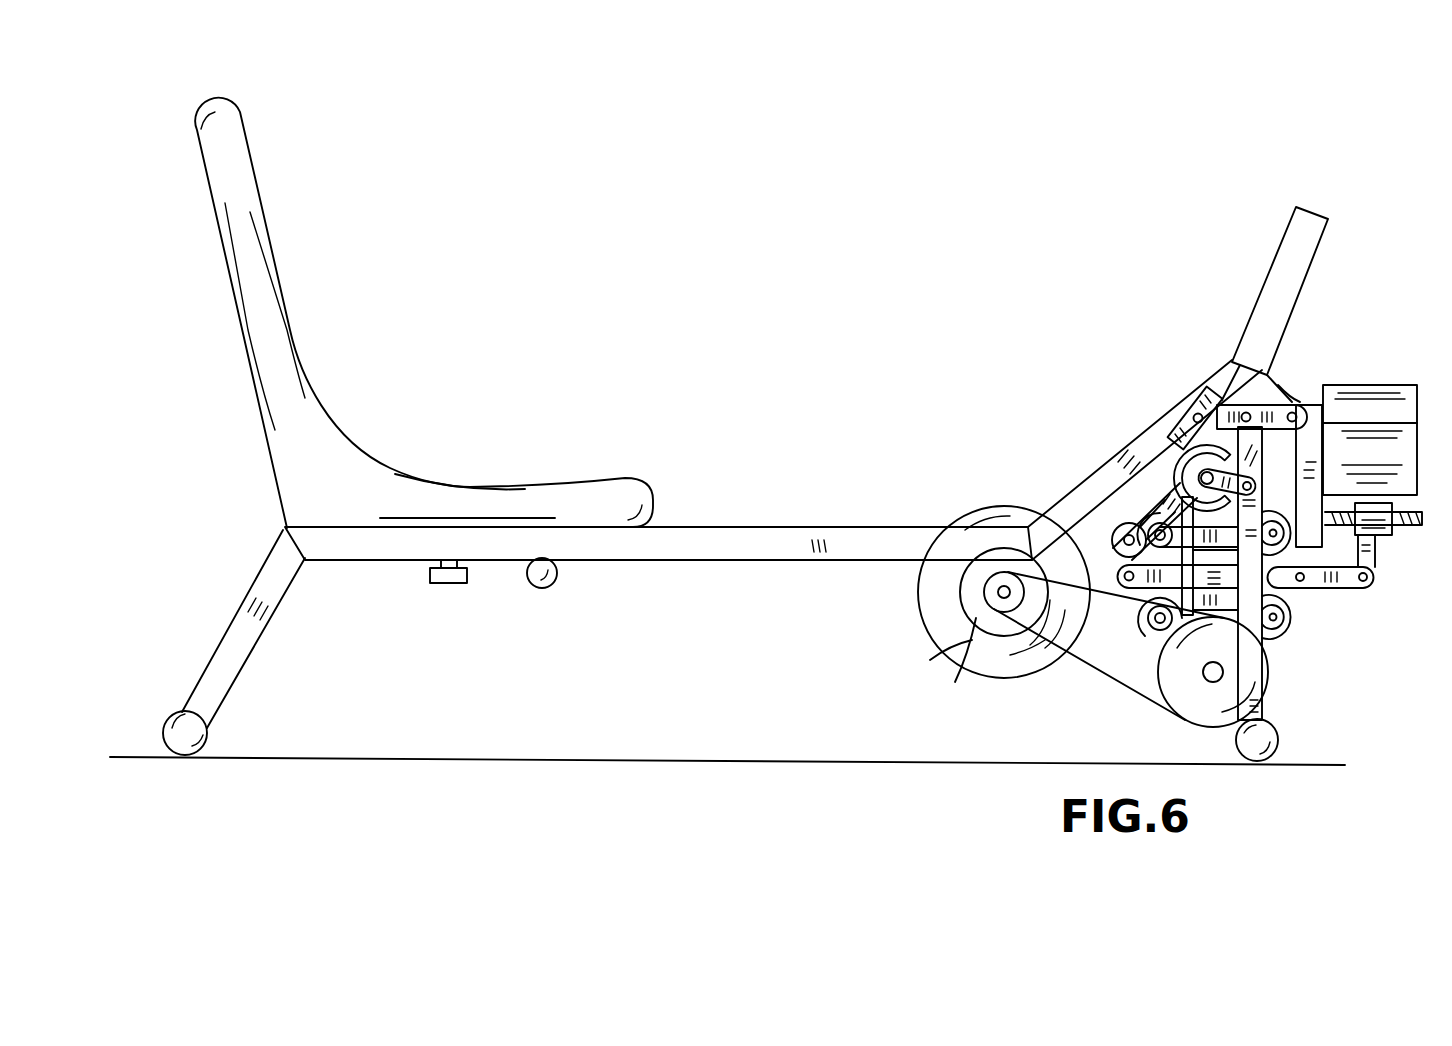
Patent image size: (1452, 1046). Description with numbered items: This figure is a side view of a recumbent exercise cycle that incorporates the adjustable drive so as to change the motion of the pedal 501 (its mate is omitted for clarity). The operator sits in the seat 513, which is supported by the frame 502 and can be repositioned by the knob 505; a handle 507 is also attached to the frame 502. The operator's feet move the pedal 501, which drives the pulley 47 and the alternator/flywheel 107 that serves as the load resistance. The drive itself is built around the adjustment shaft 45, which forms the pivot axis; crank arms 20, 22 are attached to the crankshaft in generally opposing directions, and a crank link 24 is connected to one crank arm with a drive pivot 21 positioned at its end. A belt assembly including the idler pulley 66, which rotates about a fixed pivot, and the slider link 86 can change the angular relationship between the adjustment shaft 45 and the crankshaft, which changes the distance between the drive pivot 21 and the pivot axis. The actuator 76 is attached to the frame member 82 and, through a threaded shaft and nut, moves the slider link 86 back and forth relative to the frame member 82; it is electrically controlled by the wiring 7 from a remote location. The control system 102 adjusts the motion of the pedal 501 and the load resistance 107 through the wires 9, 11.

The seat 513 is at (277, 272).
The frame 502 is at (832, 528).
The knob 505 is at (446, 585).
The handle 507 is at (540, 588).
The alternator/flywheel 107 is at (960, 591).
The wire 11 is at (944, 672).
The idler pulley 66 is at (1152, 630).
The pulley 47 is at (1267, 652).
The frame member 82 is at (1280, 697).
The slider link 86 is at (1328, 587).
The control system 102 is at (1273, 262).
The crank arm 20 is at (1265, 377).
The crank link 24 is at (1250, 405).
The wire 9 is at (1296, 356).
The wiring 7 is at (1306, 394).
The actuator 76 is at (1335, 384).
The pedal 501 is at (1203, 390).
The drive pivot 21 is at (1194, 416).
The adjustment shaft 45 is at (1176, 455).
The crank arm 22 is at (1163, 498).